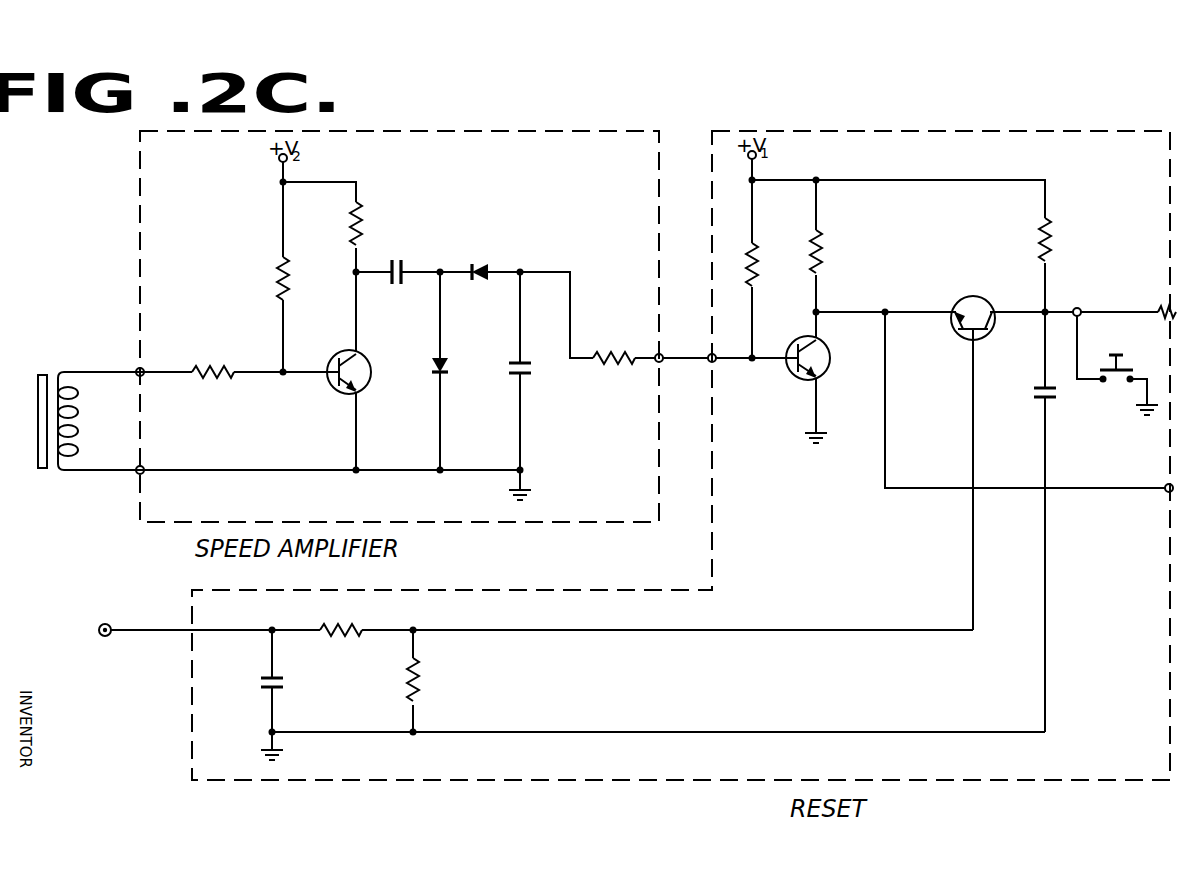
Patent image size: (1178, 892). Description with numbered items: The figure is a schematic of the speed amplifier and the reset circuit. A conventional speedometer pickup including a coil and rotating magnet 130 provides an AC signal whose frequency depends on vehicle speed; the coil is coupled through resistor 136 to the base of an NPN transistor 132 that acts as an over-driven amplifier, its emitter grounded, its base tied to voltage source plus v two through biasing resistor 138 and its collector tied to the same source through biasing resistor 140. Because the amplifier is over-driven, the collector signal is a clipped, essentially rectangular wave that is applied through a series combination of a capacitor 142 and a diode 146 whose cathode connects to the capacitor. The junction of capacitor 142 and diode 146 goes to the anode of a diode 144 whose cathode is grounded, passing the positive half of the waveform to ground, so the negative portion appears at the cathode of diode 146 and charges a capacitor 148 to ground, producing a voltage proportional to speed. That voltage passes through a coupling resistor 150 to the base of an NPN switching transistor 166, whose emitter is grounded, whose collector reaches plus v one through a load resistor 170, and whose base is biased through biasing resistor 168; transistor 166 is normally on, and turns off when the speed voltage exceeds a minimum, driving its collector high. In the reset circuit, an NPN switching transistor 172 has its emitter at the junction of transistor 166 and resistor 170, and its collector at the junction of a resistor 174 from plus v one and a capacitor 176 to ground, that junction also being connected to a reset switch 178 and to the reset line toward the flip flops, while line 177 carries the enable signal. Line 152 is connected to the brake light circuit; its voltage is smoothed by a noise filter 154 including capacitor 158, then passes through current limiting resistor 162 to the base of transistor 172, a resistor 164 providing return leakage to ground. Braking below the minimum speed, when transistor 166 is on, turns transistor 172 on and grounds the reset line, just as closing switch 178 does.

The coil and rotating magnet 130 is at (68, 368).
The NPN transistor 132 is at (338, 392).
The resistor 136 is at (200, 368).
The biasing resistor 138 is at (279, 275).
The biasing resistor 140 is at (372, 216).
The capacitor 142 is at (398, 258).
The diode 144 is at (436, 370).
The diode 146 is at (483, 266).
The capacitor 148 is at (512, 378).
The coupling resistor 150 is at (626, 341).
The line 152 is at (137, 634).
The filter network 154 is at (235, 704).
The capacitor 158 is at (285, 684).
The current limiting resistor 162 is at (358, 634).
The resistor 164 is at (420, 694).
The NPN switching transistor 166 is at (824, 372).
The biasing resistor 168 is at (759, 251).
The load resistor 170 is at (826, 248).
The NPN switching transistor 172 is at (970, 296).
The resistor 174 is at (1038, 230).
The capacitor 176 is at (1035, 402).
The line 177 is at (1153, 496).
The reset switch 178 is at (1118, 384).